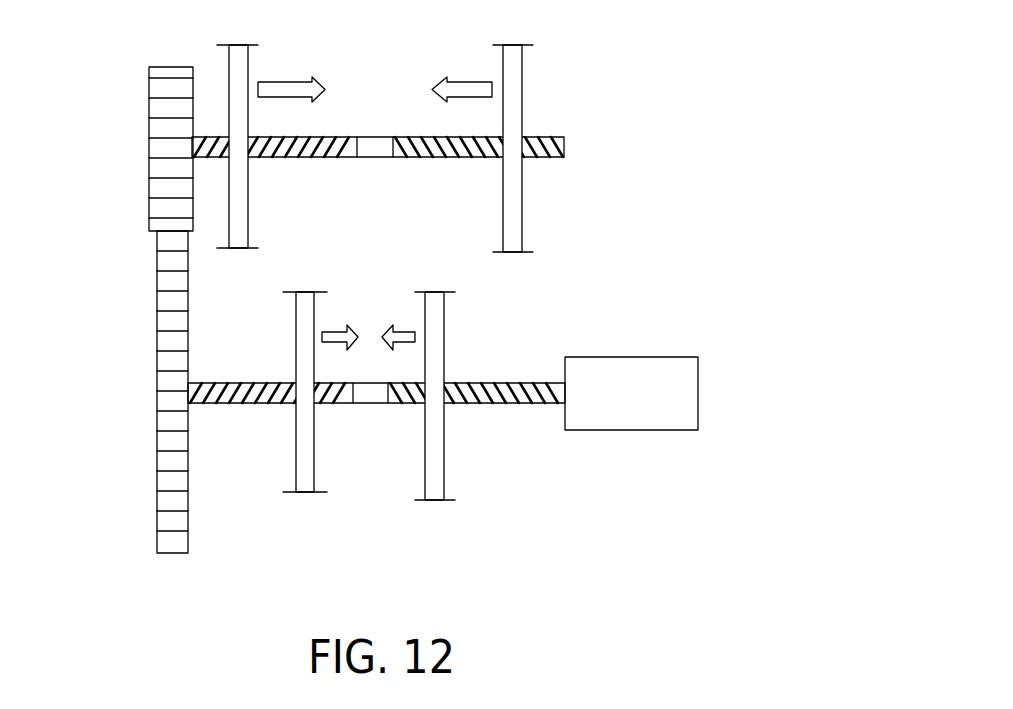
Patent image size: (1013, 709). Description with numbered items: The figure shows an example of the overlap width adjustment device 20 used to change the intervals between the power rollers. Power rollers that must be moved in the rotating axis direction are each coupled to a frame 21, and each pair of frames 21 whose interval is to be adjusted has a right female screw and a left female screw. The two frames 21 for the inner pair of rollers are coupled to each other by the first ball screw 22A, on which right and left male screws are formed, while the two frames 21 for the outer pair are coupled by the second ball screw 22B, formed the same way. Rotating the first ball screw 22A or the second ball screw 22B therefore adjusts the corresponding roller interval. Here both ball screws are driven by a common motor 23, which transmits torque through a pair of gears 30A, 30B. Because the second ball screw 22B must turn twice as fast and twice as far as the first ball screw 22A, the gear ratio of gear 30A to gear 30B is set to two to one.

The overlap width adjustment device 20 is at (604, 117).
The frame 21 is at (522, 227).
The first ball screw 22A is at (407, 403).
The second ball screw 22B is at (343, 137).
The motor 23 is at (633, 357).
The gear 30A is at (157, 327).
The gear 30B is at (149, 108).